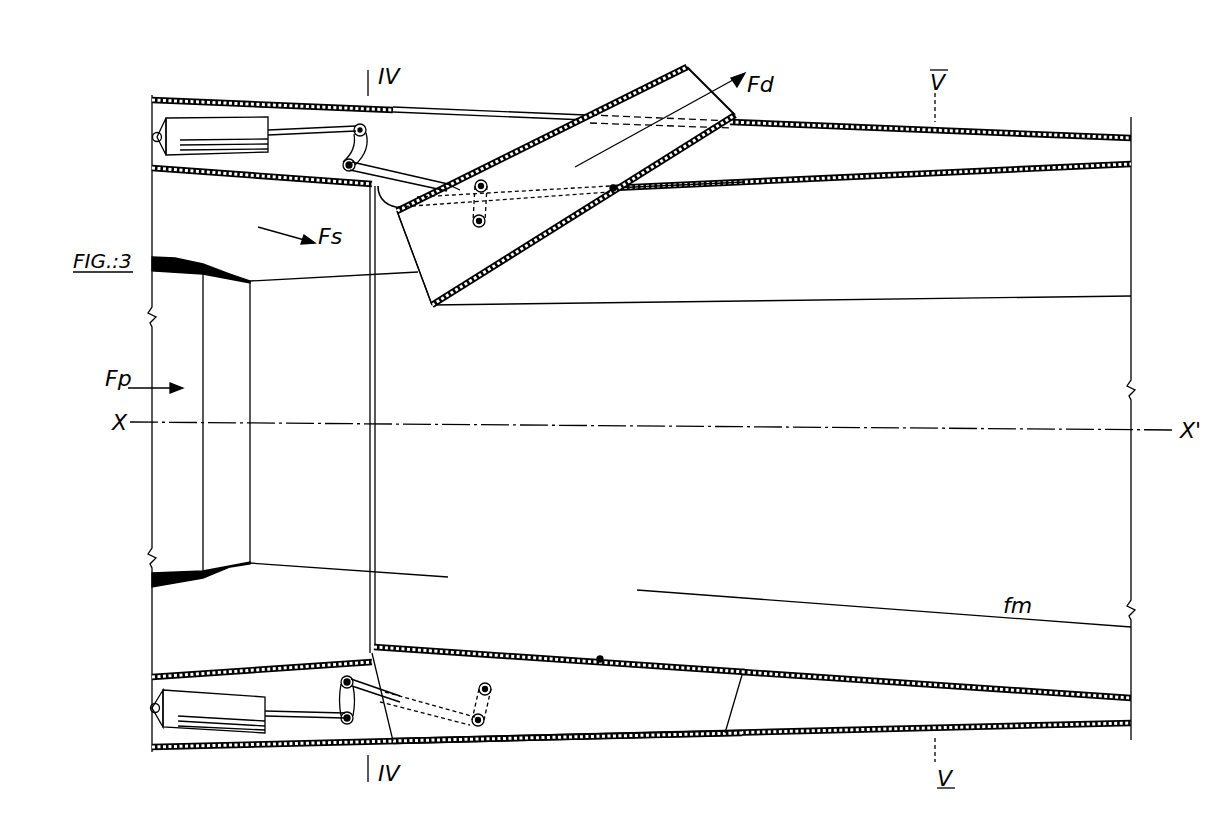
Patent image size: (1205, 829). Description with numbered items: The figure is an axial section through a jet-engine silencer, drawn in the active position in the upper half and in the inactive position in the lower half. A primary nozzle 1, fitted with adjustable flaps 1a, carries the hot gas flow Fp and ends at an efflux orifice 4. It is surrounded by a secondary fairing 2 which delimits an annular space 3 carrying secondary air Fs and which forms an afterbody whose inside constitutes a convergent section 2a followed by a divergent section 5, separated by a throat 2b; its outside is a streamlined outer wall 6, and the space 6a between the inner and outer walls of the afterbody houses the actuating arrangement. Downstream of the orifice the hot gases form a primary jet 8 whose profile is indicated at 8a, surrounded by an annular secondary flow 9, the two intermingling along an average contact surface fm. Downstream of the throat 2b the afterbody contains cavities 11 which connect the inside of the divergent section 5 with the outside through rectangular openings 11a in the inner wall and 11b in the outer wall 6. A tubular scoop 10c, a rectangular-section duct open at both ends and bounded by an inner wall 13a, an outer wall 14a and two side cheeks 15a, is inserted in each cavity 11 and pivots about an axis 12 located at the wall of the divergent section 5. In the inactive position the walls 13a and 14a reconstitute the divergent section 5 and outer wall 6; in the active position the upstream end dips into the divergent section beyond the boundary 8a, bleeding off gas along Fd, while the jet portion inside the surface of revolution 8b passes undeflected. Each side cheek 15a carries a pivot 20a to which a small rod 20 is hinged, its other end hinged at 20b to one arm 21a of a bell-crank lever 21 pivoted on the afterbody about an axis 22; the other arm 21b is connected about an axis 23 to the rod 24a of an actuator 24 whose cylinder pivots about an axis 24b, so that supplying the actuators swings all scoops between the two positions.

The primary nozzle 1 is at (173, 260).
The adjustable flaps 1a is at (223, 263).
The secondary fairing 2 is at (258, 98).
The convergent section 2a is at (247, 182).
The throat 2b is at (367, 328).
The annular space 3 is at (171, 206).
The efflux orifice 4 is at (253, 478).
The divergent section 5 is at (915, 178).
The outer wall 6 is at (883, 128).
The annular chamber 6a is at (288, 122).
The primary jet 8 is at (312, 397).
The average boundary of the primary jet 8a is at (268, 280).
The surface of revolution 8b is at (857, 300).
The secondary flow 9 is at (357, 270).
The tubular scoop 10c is at (524, 253).
The cavity 11 is at (738, 164).
The rectangular opening in inner wall 11a is at (713, 191).
The rectangular opening in outer wall 11b is at (460, 104).
The pivotal axis of scoop 12 is at (616, 189).
The inner wall of scoop 13a is at (577, 224).
The outer wall of scoop 14a is at (620, 102).
The side cheek 15a is at (443, 275).
The small rod 20 is at (494, 203).
The pivot 20a is at (476, 226).
The hinge 20b is at (486, 184).
The bell-crank lever 21 is at (397, 164).
The arm of bell-crank lever 21a is at (447, 186).
The other arm of bell-crank lever 21b is at (353, 148).
The pivotal axis of bell-crank lever 22 is at (352, 185).
The axis 23 is at (367, 130).
The actuator 24 is at (198, 130).
The actuator rod 24a is at (317, 132).
The pivotal axis of actuator cylinder 24b is at (153, 139).